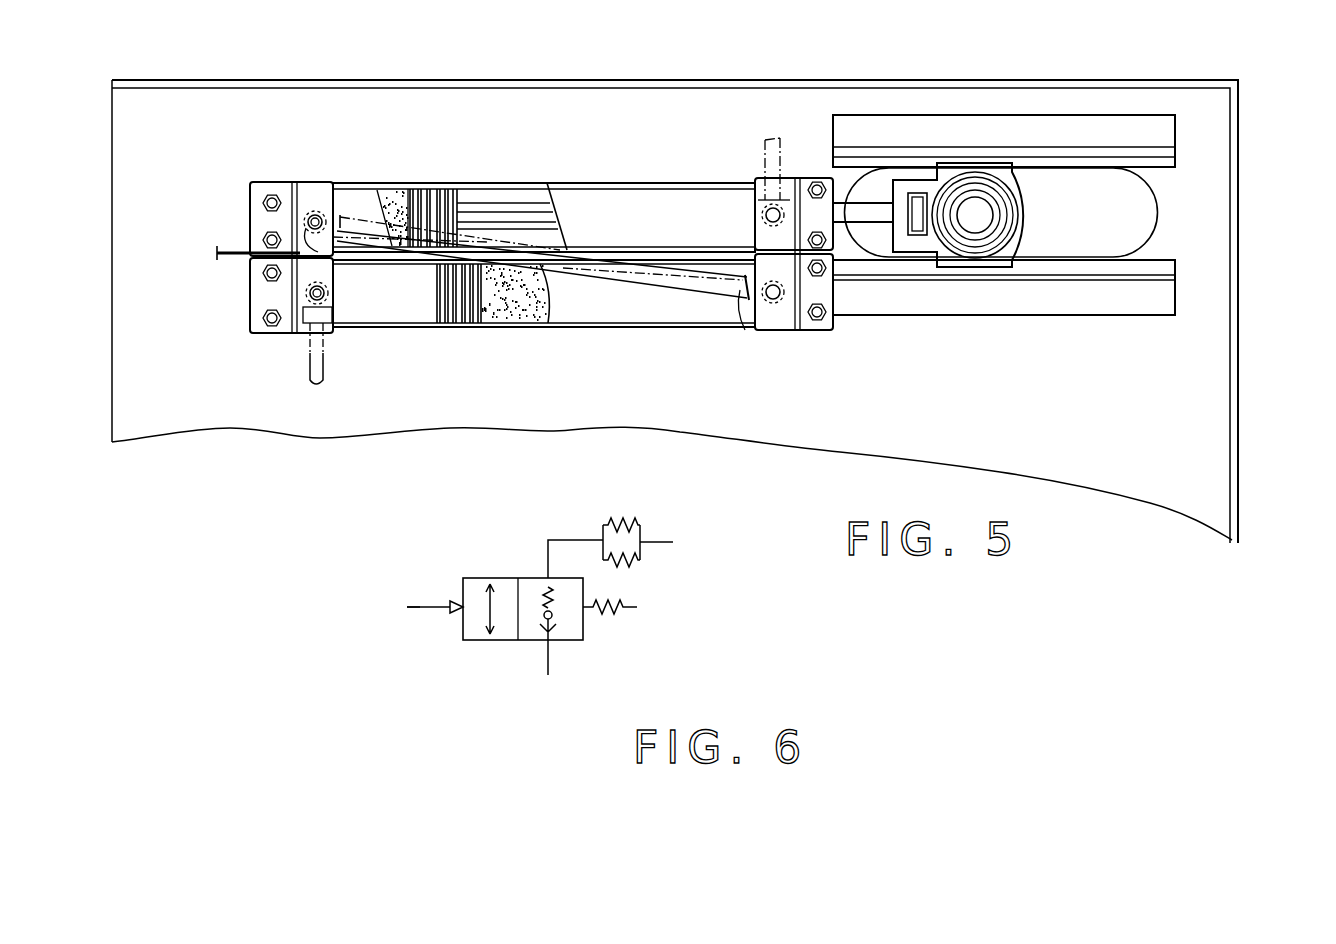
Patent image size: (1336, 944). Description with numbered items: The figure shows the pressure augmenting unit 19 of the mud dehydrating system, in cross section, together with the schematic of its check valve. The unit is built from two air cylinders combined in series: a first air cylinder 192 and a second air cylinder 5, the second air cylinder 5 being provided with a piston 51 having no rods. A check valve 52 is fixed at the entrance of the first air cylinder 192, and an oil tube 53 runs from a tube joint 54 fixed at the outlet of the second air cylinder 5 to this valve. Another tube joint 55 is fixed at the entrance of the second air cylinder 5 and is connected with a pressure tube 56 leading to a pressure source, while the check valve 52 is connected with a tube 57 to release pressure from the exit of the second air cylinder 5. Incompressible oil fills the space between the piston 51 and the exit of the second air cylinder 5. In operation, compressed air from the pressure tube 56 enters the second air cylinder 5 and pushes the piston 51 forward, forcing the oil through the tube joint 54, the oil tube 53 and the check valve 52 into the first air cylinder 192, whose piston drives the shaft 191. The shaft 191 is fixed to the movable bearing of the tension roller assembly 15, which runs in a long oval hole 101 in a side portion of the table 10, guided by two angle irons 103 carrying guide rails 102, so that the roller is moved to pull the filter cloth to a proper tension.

In FIG. 5, the second air cylinder 5 is at (610, 315).
In FIG. 5, the table 10 is at (1233, 358).
In FIG. 5, the carriage 15 is at (972, 210).
In FIG. 5, the pressure augmenting unit 19 is at (710, 166).
In FIG. 5, the piston 51 is at (465, 353).
In FIG. 5, the check valve 52 is at (315, 215).
In FIG. 6, the check valve 52 is at (500, 650).
In FIG. 5, the oil tube 53 is at (693, 282).
In FIG. 6, the oil tube 53 is at (570, 632).
In FIG. 5, the tube joint 54 is at (745, 292).
In FIG. 5, the tube joint 55 is at (312, 302).
In FIG. 5, the pressure tube 56 is at (318, 368).
In FIG. 6, the tube 57 is at (420, 615).
In FIG. 5, the long oval hole 101 is at (1138, 192).
In FIG. 5, the guide rail 102 is at (1108, 162).
In FIG. 5, the angle iron 103 is at (1058, 137).
In FIG. 5, the shaft 191 is at (855, 212).
In FIG. 5, the first air cylinder 192 is at (660, 185).
In FIG. 6, the first air cylinder 192 is at (683, 543).